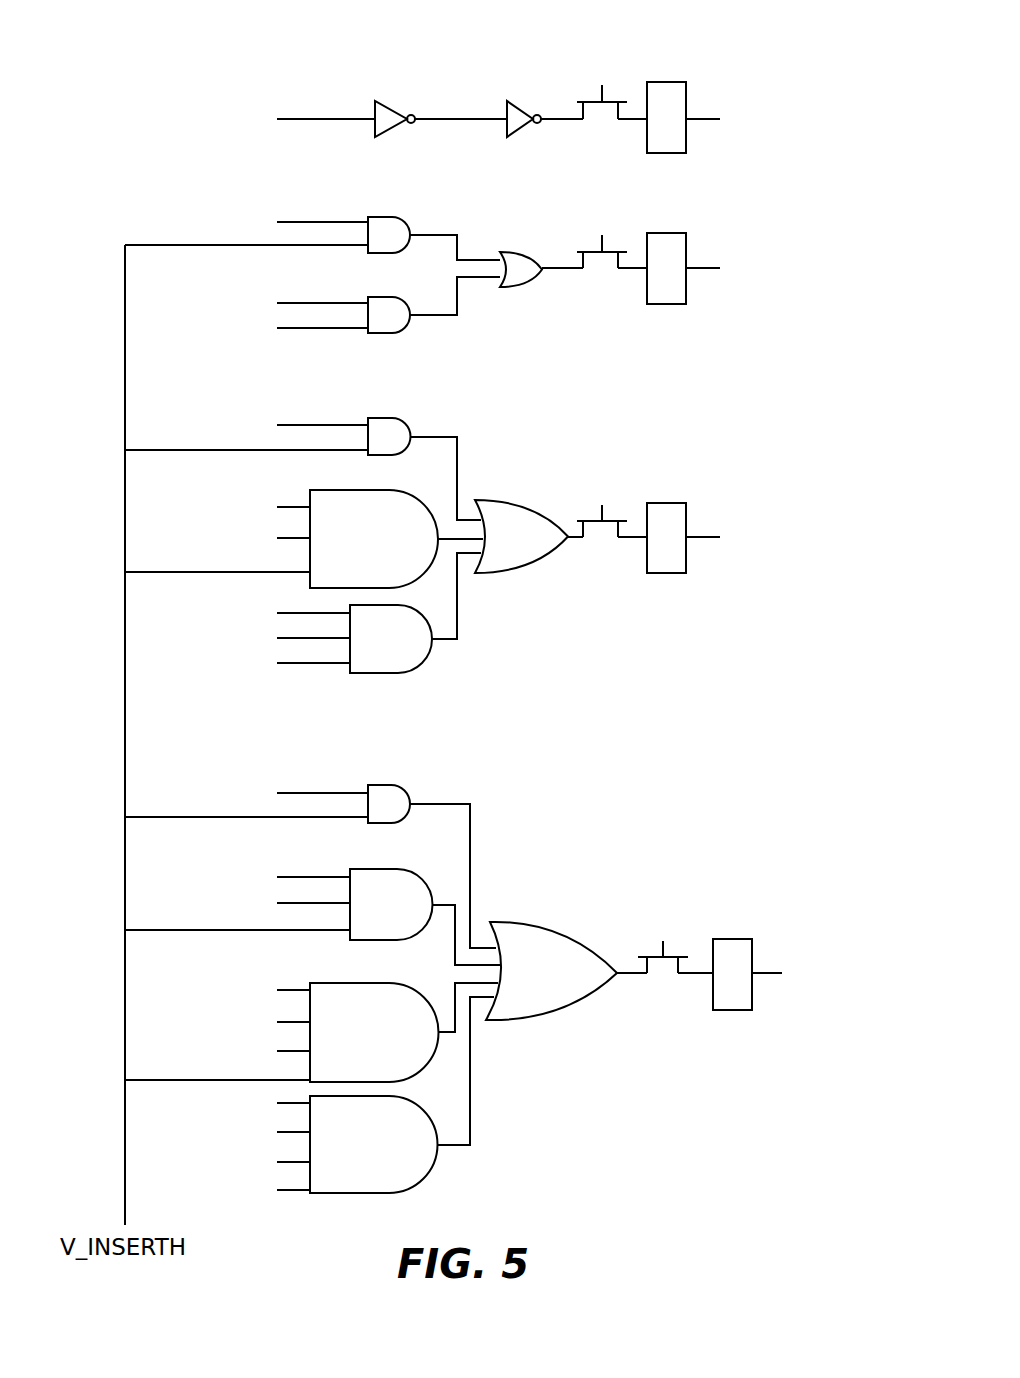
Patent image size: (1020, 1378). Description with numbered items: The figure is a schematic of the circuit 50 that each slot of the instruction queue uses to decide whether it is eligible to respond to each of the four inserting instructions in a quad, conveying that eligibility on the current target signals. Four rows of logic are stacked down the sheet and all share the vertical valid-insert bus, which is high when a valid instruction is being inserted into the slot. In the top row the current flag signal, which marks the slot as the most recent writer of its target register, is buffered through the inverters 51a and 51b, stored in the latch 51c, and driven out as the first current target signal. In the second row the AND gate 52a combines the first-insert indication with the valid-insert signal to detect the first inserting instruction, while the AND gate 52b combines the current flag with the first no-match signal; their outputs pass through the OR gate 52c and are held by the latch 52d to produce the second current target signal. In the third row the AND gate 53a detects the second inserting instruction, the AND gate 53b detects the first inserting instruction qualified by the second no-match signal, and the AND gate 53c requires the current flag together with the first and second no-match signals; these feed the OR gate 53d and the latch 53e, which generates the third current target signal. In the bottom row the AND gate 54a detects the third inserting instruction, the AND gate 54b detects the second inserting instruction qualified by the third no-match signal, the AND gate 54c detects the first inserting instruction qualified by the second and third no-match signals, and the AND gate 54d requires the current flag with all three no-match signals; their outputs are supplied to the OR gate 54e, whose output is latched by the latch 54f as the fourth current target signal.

The circuit 50 is at (118, 108).
The inverter 51a is at (374, 108).
The inverter 51b is at (507, 108).
The latch 51c is at (678, 82).
The AND gate 52a is at (400, 222).
The AND gate 52b is at (400, 328).
The OR gate 52c is at (510, 253).
The latch 52d is at (678, 233).
The AND gate 53a is at (400, 422).
The AND gate 53b is at (380, 490).
The AND gate 53c is at (405, 672).
The OR gate 53d is at (540, 571).
The latch 53e is at (678, 503).
The AND gate 54a is at (400, 790).
The AND gate 54b is at (400, 870).
The AND gate 54c is at (380, 983).
The AND gate 54d is at (405, 1192).
The OR gate 54e is at (575, 1017).
The latch 54f is at (742, 939).